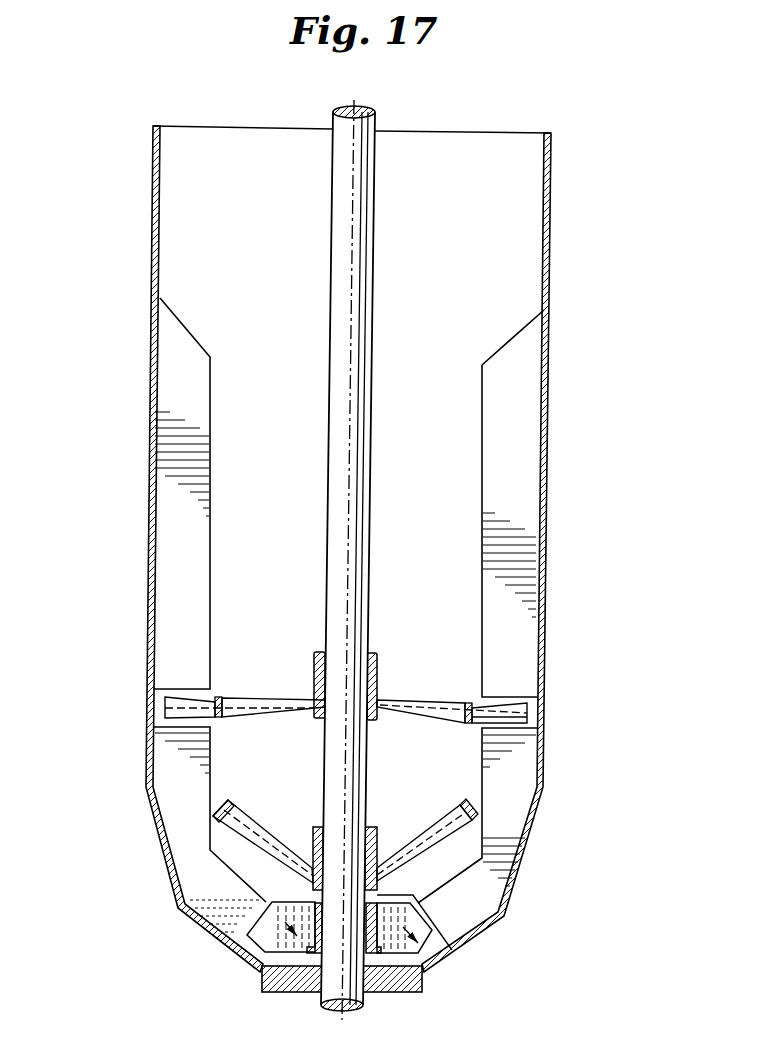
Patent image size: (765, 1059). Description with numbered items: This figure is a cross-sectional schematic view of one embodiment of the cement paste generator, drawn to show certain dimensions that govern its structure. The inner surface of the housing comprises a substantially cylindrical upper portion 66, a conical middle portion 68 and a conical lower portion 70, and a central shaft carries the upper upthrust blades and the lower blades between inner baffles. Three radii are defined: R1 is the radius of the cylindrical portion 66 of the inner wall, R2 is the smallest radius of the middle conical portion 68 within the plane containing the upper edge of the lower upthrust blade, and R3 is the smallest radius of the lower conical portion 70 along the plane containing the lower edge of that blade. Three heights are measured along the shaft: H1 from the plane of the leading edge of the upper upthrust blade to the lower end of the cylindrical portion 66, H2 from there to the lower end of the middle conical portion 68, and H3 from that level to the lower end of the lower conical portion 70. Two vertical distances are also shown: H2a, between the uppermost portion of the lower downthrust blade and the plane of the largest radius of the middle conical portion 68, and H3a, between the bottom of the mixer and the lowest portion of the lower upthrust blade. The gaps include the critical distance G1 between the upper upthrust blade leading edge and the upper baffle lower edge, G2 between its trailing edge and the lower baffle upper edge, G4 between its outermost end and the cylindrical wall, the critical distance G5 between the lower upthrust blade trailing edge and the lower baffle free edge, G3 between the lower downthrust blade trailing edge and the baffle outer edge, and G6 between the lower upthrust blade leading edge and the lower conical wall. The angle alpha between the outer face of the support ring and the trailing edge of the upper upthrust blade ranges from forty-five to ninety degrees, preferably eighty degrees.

The cylindrical upper portion 66 is at (148, 424).
The conical middle portion 68 is at (163, 855).
The conical lower portion 70 is at (470, 940).
The radius of the cylindrical portion of the inner wall R1 is at (352, 232).
The smallest radius of the middle conical portion R2 is at (190, 875).
The smallest radius of the lower conical portion R3 is at (247, 975).
The first critical height H1 is at (268, 787).
The second critical height H2 is at (180, 907).
The first critical vertical distance H2a is at (263, 830).
The third critical height H3 is at (250, 967).
The second critical vertical distance H3a is at (265, 952).
The critical distance G1 is at (480, 697).
The distance G2 is at (480, 730).
The distance G3 is at (515, 775).
The distance G4 is at (197, 657).
The critical distance G5 is at (383, 897).
The distance G6 is at (435, 968).
The angle α alpha is at (473, 655).